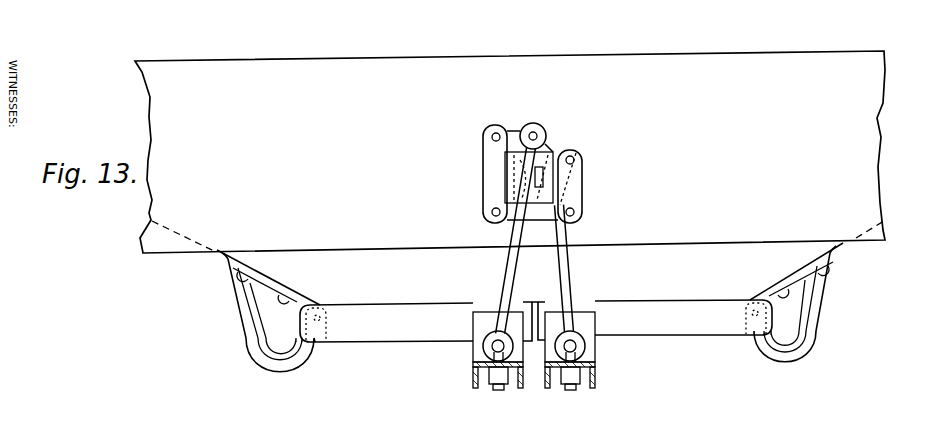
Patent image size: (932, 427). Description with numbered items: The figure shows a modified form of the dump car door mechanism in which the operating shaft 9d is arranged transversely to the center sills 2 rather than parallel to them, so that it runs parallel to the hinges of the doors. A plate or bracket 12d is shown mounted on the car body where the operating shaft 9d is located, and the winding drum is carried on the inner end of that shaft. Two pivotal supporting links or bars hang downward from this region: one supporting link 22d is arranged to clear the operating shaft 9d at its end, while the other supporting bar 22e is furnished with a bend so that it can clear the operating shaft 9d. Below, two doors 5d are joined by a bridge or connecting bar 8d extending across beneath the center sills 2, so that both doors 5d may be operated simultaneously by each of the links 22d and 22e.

The center sills 2 is at (510, 152).
The doors 5d is at (695, 332).
The bridge or connecting bar 8d is at (619, 387).
The operating shaft 9d is at (543, 180).
The bracket plate 12d is at (515, 190).
The supporting link or bar 22d is at (512, 270).
The supporting link or bar 22e is at (569, 270).